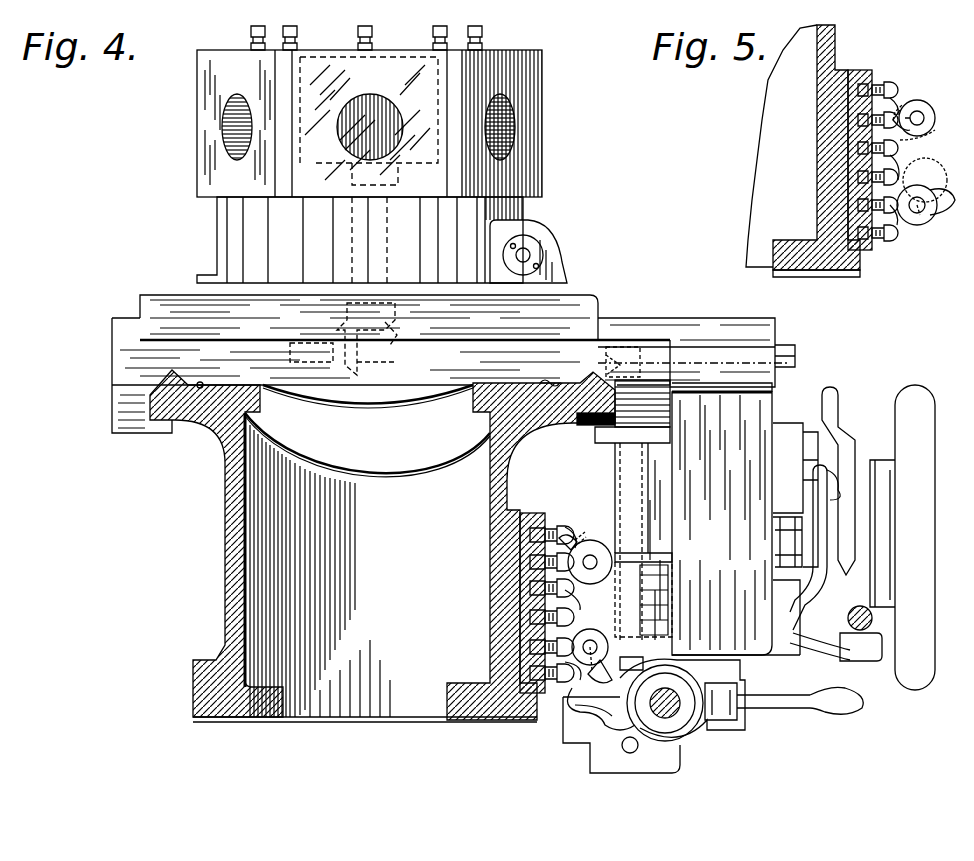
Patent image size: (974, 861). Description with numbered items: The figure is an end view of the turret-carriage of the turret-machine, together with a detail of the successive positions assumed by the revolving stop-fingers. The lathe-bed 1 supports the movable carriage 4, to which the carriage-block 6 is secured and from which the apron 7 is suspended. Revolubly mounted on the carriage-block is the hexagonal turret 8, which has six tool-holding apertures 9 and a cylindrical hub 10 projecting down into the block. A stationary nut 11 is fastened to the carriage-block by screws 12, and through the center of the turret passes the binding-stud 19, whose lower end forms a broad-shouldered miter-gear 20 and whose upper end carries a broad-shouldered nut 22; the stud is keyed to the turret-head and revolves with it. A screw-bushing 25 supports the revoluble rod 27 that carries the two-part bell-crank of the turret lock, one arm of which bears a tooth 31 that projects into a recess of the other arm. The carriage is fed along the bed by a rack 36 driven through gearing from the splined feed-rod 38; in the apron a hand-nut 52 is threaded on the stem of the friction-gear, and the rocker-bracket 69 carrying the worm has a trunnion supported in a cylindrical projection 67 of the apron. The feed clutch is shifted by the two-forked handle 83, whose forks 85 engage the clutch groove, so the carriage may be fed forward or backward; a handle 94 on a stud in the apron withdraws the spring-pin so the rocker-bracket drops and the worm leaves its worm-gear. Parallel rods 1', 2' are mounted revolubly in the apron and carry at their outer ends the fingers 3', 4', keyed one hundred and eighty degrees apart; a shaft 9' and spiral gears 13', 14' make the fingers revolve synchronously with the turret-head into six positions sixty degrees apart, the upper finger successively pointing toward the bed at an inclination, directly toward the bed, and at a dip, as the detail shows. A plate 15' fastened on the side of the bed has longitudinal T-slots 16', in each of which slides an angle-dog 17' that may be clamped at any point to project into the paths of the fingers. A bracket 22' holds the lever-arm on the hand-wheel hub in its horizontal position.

In FIG. 4, the lathe-bed 1 is at (382, 546).
In FIG. 5, the lathe-bed 1 is at (791, 151).
In FIG. 4, the movable carriage 4 is at (696, 340).
In FIG. 4, the carriage-block 6 is at (217, 233).
In FIG. 4, the apron 7 is at (773, 408).
In FIG. 4, the hexagonal turret 8 is at (542, 82).
In FIG. 4, the tool-holding apertures 9 is at (392, 111).
In FIG. 4, the cylindrical hub 10 is at (405, 365).
In FIG. 4, the stationary nut 11 is at (613, 361).
In FIG. 4, the screws 12 is at (345, 318).
In FIG. 4, the binding-stud 19 is at (352, 218).
In FIG. 4, the broad-shouldered miter-gear 20 is at (395, 338).
In FIG. 4, the broad-shouldered nut 22 is at (365, 124).
In FIG. 4, the screw-bushing 25 is at (546, 248).
In FIG. 4, the revoluble rod 27 is at (526, 253).
In FIG. 4, the tooth 31 is at (936, 447).
In FIG. 4, the rack 36 is at (578, 428).
In FIG. 4, the splined feed-rod 38 is at (676, 708).
In FIG. 4, the hand-nut 52 is at (838, 398).
In FIG. 4, the cylindrical projection 67 is at (625, 712).
In FIG. 4, the rocker-bracket 69 is at (590, 755).
In FIG. 4, the two-forked handle 83 is at (842, 712).
In FIG. 4, the forks 85 is at (700, 666).
In FIG. 4, the handle 94 is at (820, 562).
In FIG. 4, the parallel rod 1' is at (585, 545).
In FIG. 5, the parallel rod 1' is at (929, 118).
In FIG. 4, the parallel rod 2' is at (597, 675).
In FIG. 5, the parallel rod 2' is at (912, 227).
In FIG. 4, the upper finger 3' is at (583, 521).
In FIG. 5, the upper finger 3' is at (914, 107).
In FIG. 4, the lower finger 4' is at (599, 667).
In FIG. 5, the lower finger 4' is at (933, 191).
In FIG. 4, the shaft 9' is at (657, 541).
In FIG. 4, the spiral gear 13' is at (670, 604).
In FIG. 4, the spiral gear 14' is at (679, 600).
In FIG. 4, the plate 15' is at (541, 584).
In FIG. 5, the plate 15' is at (862, 140).
In FIG. 4, the T-slots 16' is at (512, 604).
In FIG. 5, the T-slots 16' is at (839, 161).
In FIG. 4, the angle-dog 17' is at (575, 605).
In FIG. 5, the angle-dog 17' is at (898, 163).
In FIG. 4, the bracket 22' is at (872, 659).